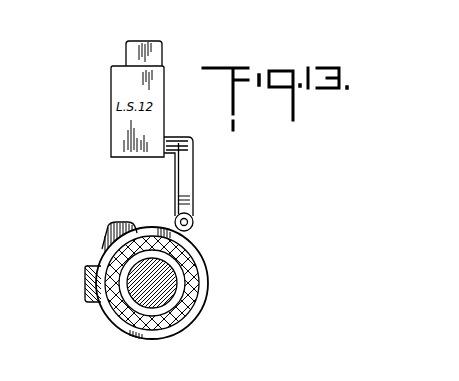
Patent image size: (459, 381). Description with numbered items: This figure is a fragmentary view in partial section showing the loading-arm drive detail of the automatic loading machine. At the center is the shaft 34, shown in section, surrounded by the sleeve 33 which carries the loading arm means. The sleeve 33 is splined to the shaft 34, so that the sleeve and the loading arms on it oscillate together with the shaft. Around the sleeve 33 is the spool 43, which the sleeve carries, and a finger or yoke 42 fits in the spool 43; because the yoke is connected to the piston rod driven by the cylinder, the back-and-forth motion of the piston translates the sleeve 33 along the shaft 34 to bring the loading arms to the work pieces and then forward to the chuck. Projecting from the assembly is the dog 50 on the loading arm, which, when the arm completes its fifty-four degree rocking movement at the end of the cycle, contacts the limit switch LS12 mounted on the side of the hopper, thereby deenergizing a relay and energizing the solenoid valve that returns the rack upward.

The sleeve 33 is at (185, 279).
The shaft 34 is at (153, 285).
The finger or yoke 42 is at (85, 281).
The spool 43 is at (207, 268).
The dog 50 is at (120, 220).